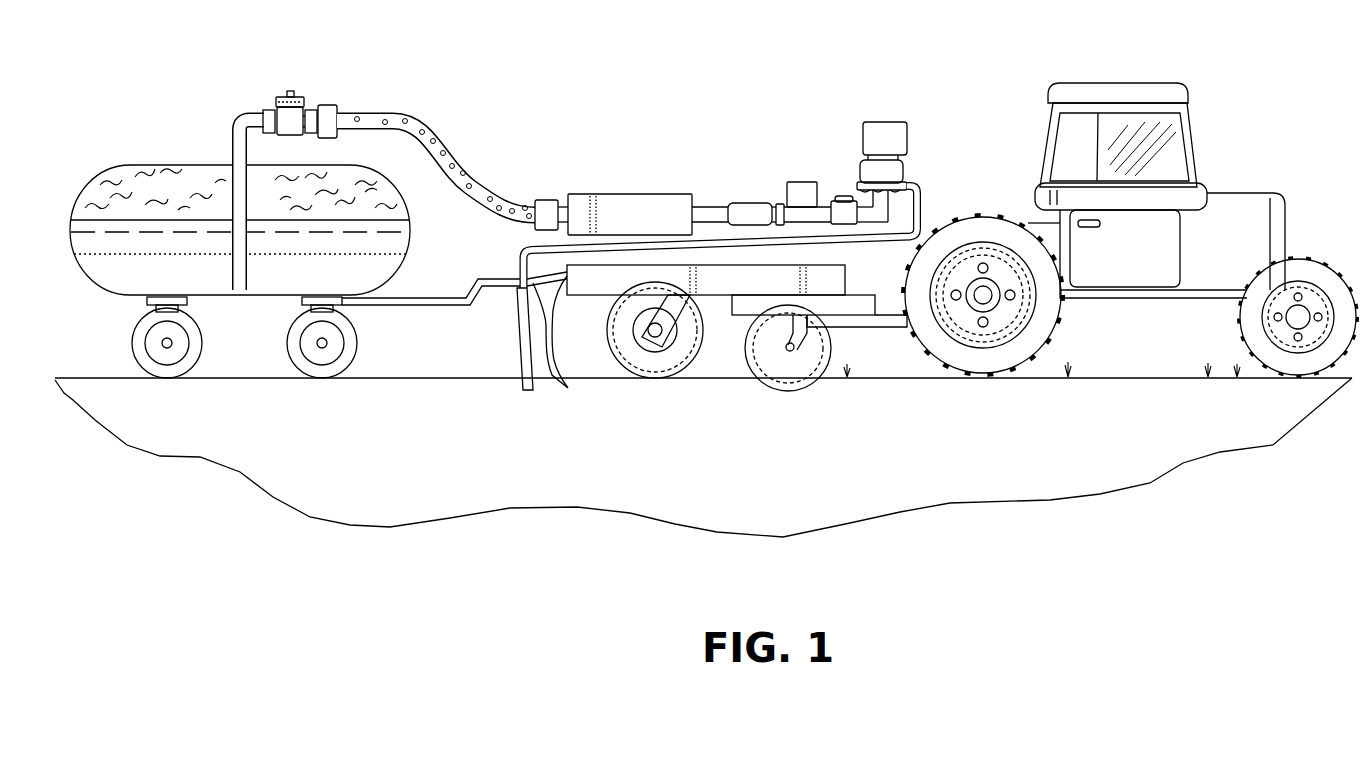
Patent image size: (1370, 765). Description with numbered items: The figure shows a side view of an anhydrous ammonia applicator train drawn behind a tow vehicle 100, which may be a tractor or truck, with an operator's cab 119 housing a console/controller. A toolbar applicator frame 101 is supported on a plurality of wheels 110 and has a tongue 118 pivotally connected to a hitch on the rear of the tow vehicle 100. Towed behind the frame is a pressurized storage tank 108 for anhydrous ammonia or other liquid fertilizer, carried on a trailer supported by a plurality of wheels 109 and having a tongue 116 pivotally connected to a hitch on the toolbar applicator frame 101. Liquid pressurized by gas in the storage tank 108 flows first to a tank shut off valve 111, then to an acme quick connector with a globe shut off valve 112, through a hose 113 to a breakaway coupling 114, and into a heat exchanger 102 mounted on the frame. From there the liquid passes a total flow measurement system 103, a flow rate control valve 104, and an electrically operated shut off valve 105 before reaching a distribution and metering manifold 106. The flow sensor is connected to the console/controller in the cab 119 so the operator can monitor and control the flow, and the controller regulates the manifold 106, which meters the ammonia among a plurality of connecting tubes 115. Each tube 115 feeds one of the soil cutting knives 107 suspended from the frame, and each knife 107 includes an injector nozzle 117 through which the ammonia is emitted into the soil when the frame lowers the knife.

The tow vehicle 100 is at (1130, 205).
The toolbar applicator frame 101 is at (615, 292).
The heat exchanger 102 is at (652, 194).
The total flow measurement system 103 is at (753, 204).
The flow rate control valve 104 is at (807, 182).
The electrically operated shut off valve 105 is at (848, 200).
The distribution and metering manifold 106 is at (889, 122).
The soil cutting knife 107 is at (567, 387).
The storage tank 108 is at (88, 187).
The wheels 109 is at (353, 357).
The wheels 110 is at (657, 378).
The tank shut off valve 111 is at (268, 110).
The acme quick connector with globe shut off valve 112 is at (331, 105).
The hose 113 is at (404, 112).
The breakaway coupling 114 is at (549, 199).
The connecting tubes 115 is at (847, 240).
The tongue 116 is at (492, 288).
The injector nozzle 117 is at (527, 387).
The tongue 118 is at (892, 328).
The operator's cab 119 is at (1047, 135).